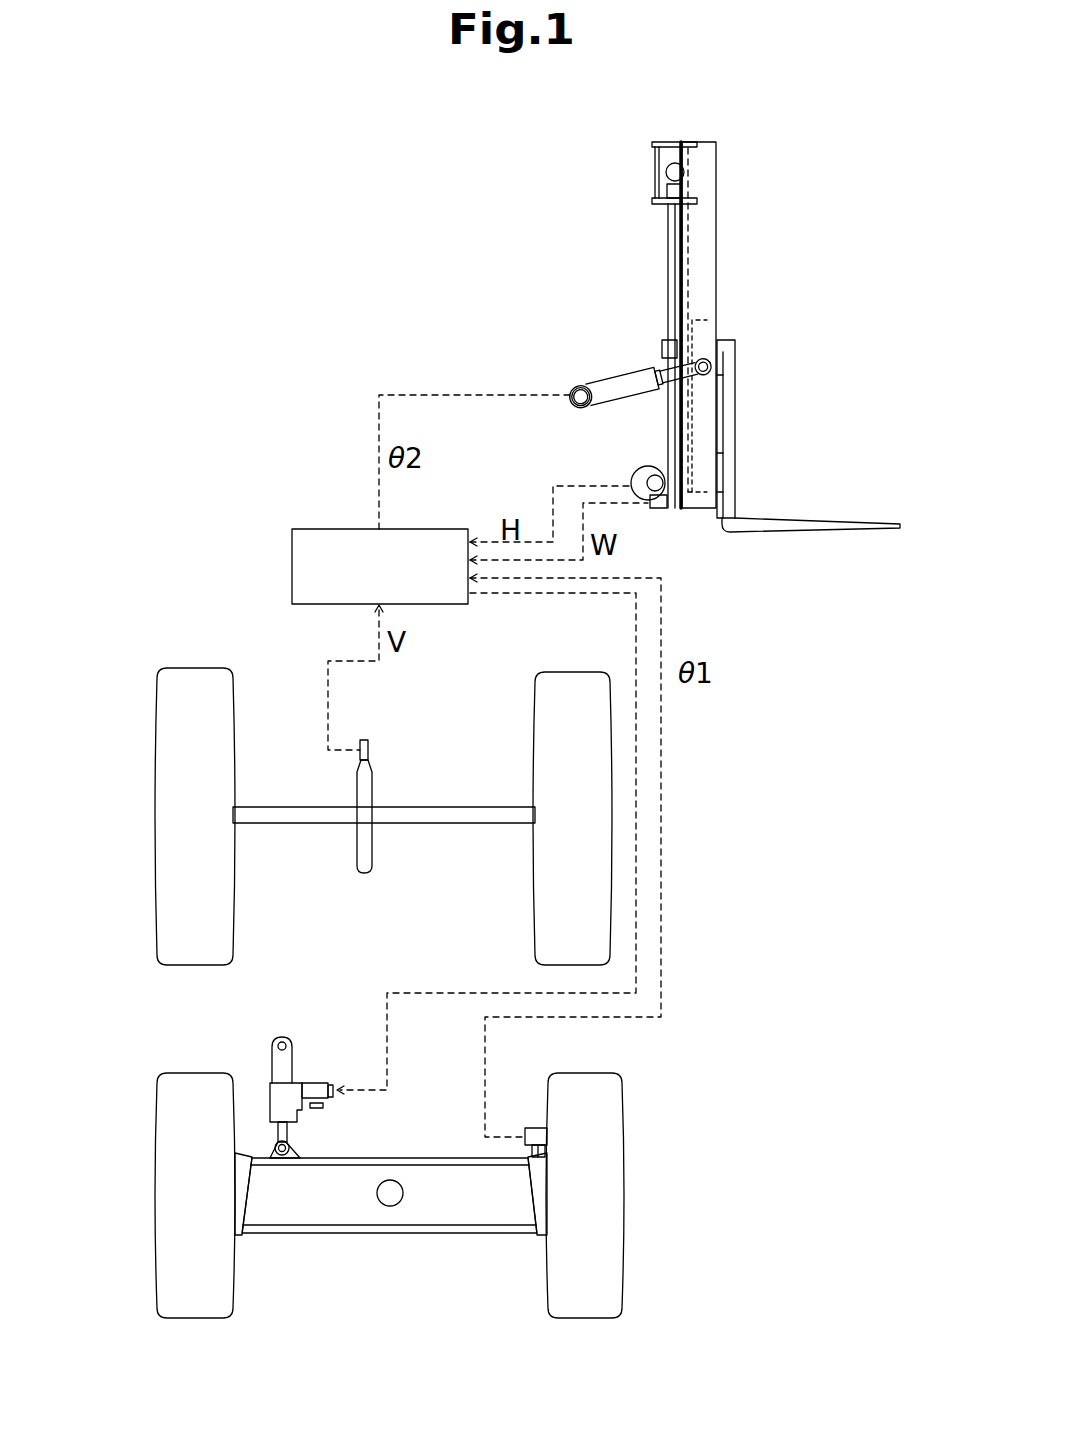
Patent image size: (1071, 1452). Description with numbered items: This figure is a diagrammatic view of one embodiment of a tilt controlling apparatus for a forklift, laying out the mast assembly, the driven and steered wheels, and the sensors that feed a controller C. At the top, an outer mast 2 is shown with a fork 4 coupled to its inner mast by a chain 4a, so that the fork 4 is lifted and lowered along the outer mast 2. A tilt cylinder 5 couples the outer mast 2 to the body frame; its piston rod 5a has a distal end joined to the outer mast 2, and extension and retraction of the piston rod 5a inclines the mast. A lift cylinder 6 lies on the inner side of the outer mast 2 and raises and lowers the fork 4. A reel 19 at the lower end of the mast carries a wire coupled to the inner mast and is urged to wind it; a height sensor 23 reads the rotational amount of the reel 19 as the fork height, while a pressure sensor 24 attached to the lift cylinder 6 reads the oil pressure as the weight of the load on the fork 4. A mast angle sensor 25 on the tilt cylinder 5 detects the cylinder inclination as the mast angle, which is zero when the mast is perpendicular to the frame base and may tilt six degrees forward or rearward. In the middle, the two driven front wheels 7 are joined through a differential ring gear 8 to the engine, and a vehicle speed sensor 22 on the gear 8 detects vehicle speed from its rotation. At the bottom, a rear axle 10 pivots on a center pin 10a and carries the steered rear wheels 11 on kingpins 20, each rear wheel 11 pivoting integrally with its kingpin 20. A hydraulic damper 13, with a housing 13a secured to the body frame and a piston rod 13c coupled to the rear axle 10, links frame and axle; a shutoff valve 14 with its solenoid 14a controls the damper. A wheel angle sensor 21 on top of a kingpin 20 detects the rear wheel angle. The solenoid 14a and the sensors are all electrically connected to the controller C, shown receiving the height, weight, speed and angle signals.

The outer mast 2 is at (716, 200).
The fork 4 is at (805, 525).
The chain 4a is at (690, 258).
The tilt cylinder 5 is at (632, 378).
The piston rod 5a is at (662, 360).
The lift cylinder 6 is at (667, 273).
The front wheel 7 is at (192, 668).
The differential ring gear 8 is at (372, 782).
The rear axle 10 is at (450, 1235).
The center pin 10a is at (403, 1193).
The rear wheel 11 is at (157, 1193).
The hydraulic damper 13 is at (270, 1097).
The housing 13a is at (275, 1108).
The piston rod 13c is at (288, 1130).
The shutoff valve 14 is at (317, 1083).
The solenoid 14a is at (333, 1102).
The reel 19 is at (667, 468).
The kingpin 20 is at (248, 1200).
The wheel angle sensor 21 is at (533, 1127).
The vehicle speed sensor 22 is at (370, 750).
The height sensor 23 is at (637, 470).
The pressure sensor 24 is at (650, 510).
The mast angle sensor 25 is at (574, 388).
The controller C is at (334, 528).